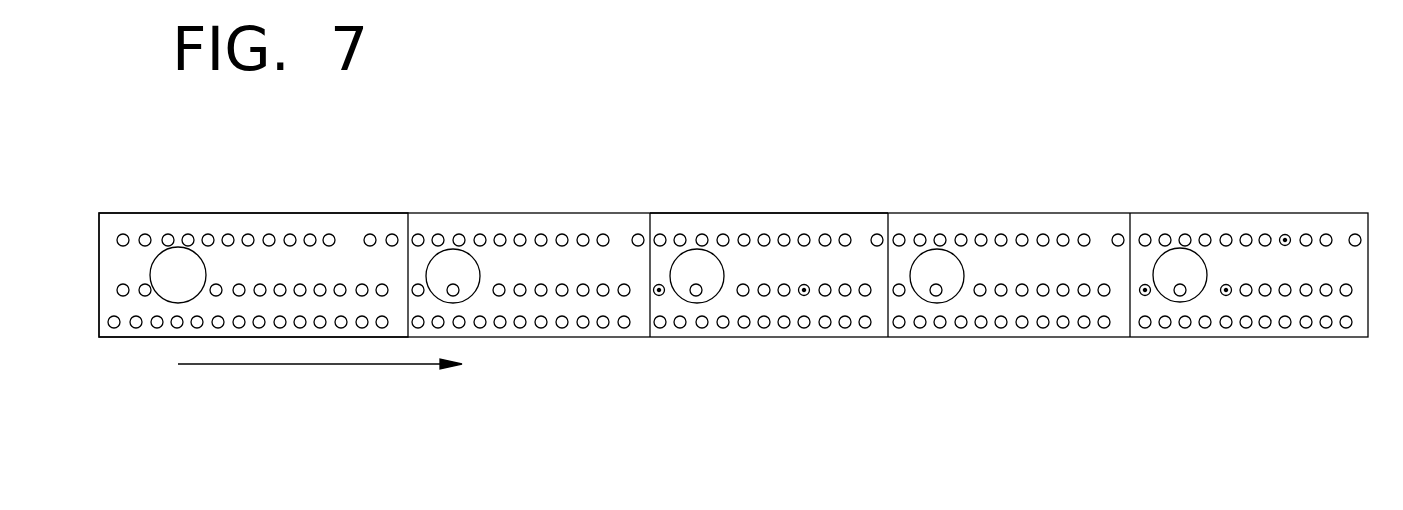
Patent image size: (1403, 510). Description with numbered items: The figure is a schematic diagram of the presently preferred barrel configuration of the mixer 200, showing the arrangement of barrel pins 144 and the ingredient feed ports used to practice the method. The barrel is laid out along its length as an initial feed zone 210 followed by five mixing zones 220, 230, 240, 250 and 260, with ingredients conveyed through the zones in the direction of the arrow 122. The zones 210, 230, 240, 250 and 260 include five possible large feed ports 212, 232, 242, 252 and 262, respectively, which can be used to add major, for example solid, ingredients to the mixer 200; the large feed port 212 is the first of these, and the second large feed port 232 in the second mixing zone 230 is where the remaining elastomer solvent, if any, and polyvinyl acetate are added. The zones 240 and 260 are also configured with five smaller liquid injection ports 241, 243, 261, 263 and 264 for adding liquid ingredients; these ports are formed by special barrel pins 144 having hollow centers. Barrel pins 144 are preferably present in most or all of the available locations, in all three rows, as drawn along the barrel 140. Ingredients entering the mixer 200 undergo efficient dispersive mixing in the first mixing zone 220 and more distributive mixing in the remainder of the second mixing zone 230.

The mixer 200 is at (1299, 208).
The initial feed zone 210 is at (195, 212).
The first mixing zone 220 is at (343, 212).
The second mixing zone 230 is at (518, 212).
The mixing zone 240 is at (710, 212).
The mixing zone 250 is at (1034, 212).
The mixing zone 260 is at (1186, 212).
The large feed port 212 is at (188, 280).
The second large feed port 232 is at (470, 275).
The large feed port 242 is at (712, 276).
The large feed port 252 is at (952, 275).
The large feed port 262 is at (1192, 275).
The liquid injection port 241 is at (657, 285).
The liquid injection port 243 is at (808, 284).
The liquid injection port 261 is at (1142, 284).
The liquid injection port 263 is at (1225, 297).
The liquid injection port 264 is at (1286, 247).
The barrel pins 144 is at (806, 234).
The tape web 140 is at (862, 232).
The arrow 122 is at (320, 378).